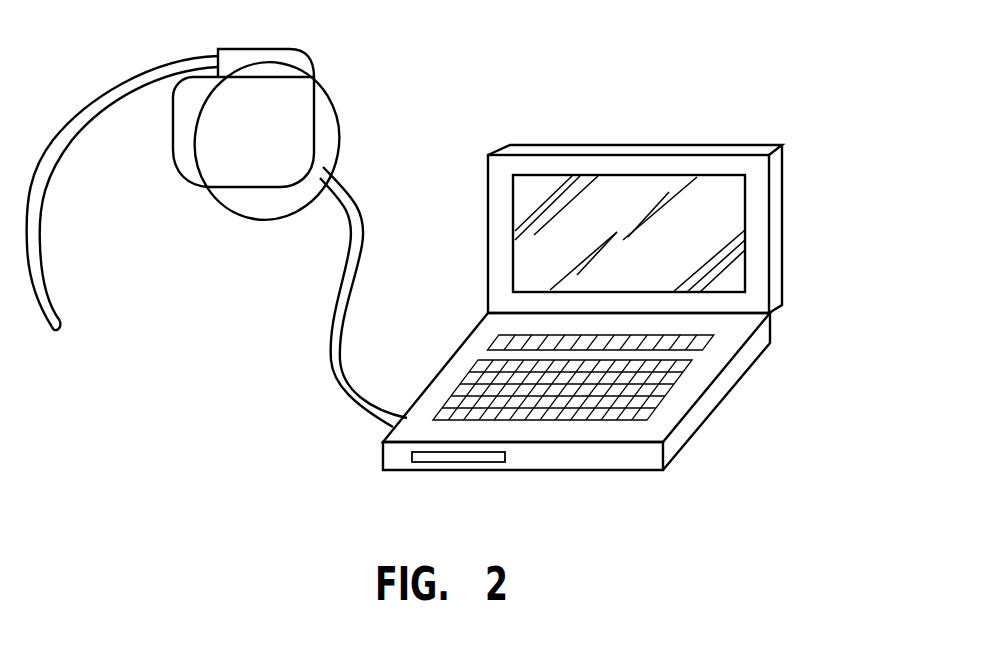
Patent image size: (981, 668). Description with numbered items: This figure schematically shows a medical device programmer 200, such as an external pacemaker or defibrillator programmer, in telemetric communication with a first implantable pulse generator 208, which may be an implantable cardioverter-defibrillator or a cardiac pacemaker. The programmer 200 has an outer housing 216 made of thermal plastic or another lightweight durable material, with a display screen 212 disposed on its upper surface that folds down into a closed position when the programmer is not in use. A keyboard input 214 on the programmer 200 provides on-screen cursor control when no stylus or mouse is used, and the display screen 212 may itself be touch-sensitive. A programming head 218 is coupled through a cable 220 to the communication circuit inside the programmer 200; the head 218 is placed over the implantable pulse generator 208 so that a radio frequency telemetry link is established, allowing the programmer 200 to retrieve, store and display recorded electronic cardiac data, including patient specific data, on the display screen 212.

The medical device programmer 200 is at (638, 337).
The first implantable pulse generator 208 is at (257, 48).
The display screen 212 is at (728, 205).
The keyboard input 214 is at (543, 402).
The outer housing 216 is at (717, 413).
The programming head 218 is at (190, 168).
The cable 220 is at (353, 298).